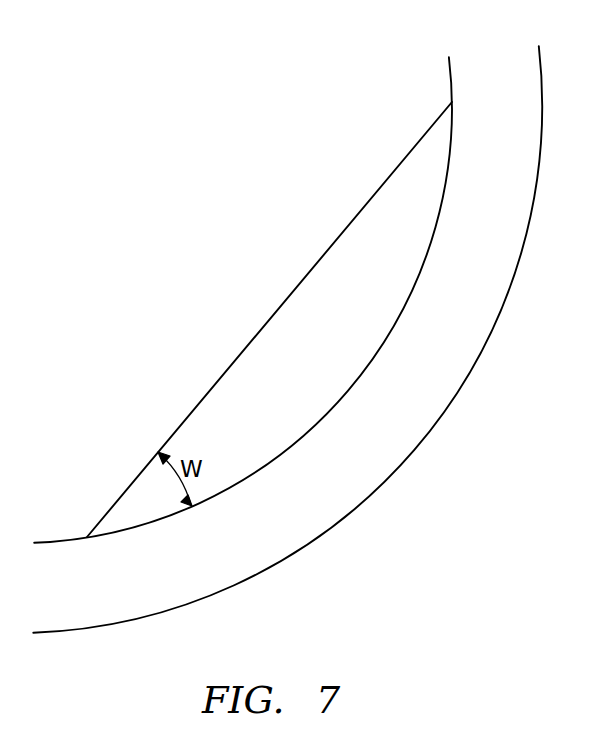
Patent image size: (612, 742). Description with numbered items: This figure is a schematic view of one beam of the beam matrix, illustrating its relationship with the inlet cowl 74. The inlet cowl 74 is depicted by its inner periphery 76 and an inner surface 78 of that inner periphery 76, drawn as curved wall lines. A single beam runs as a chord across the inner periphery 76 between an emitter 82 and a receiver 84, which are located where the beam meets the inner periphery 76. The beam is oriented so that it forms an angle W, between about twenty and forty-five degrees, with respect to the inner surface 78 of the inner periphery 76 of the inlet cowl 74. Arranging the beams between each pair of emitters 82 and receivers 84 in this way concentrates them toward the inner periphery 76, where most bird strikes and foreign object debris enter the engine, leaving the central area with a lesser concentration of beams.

The inlet cowl 74 is at (455, 213).
The inner periphery 76 is at (381, 341).
The inner surface 78 is at (118, 530).
The emitter 82 is at (87, 540).
The receiver 84 is at (452, 102).